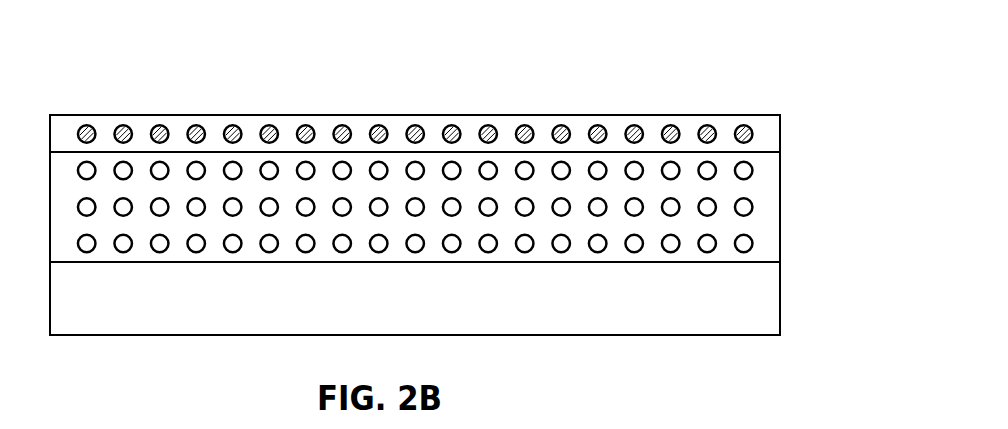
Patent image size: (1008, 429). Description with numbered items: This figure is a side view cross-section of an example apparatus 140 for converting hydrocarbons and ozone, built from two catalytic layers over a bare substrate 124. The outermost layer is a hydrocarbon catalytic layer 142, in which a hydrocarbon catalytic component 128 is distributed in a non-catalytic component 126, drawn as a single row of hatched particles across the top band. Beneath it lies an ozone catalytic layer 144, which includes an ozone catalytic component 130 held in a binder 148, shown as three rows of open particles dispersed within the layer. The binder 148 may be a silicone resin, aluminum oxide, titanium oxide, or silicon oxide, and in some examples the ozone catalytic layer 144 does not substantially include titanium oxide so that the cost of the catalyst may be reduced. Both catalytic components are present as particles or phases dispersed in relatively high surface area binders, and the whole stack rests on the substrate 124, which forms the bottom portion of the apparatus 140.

The apparatus 140 is at (744, 41).
The hydrocarbon catalytic layer 142 is at (781, 131).
The non-catalytic component 126 is at (503, 135).
The hydrocarbon catalytic component 128 is at (634, 132).
The ozone catalytic layer 144 is at (781, 239).
The binder 148 is at (762, 173).
The ozone catalytic component 130 is at (750, 200).
The substrate 124 is at (781, 295).